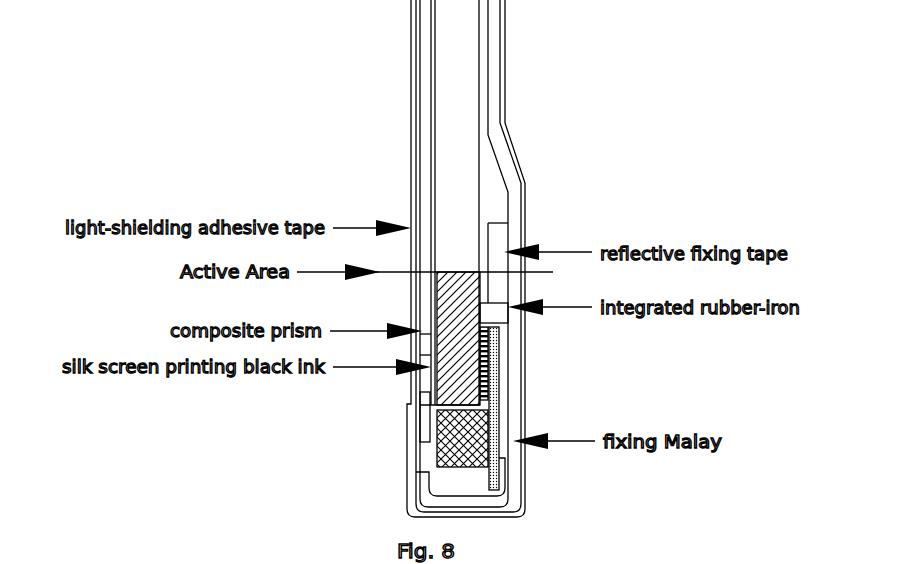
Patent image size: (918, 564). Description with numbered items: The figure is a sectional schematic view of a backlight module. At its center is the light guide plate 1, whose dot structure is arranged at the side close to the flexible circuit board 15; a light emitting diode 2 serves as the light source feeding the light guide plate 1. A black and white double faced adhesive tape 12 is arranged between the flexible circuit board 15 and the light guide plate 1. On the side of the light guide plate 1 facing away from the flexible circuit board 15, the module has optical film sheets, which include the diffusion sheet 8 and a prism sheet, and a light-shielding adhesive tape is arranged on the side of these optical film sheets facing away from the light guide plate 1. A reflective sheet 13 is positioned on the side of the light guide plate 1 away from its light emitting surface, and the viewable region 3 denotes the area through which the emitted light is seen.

The light guide plate 1 is at (515, 403).
The light emitting diode 2 is at (404, 458).
The viewable region 3 is at (380, 297).
The diffusion sheet 8 is at (398, 398).
The adhesive tape 12 is at (521, 372).
The reflective sheet 13 is at (516, 202).
The flexible circuit board 15 is at (533, 473).